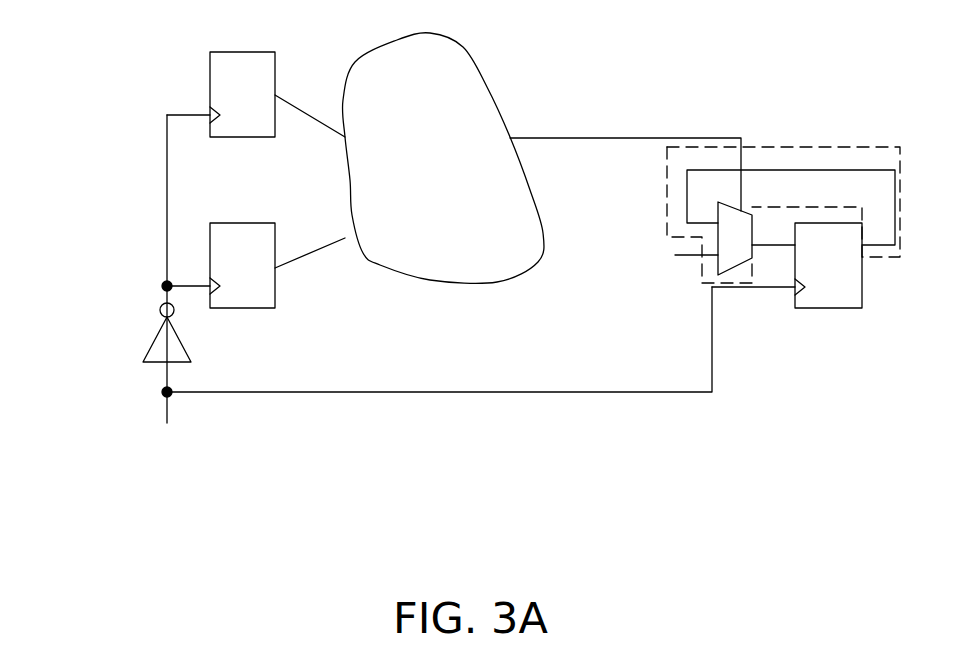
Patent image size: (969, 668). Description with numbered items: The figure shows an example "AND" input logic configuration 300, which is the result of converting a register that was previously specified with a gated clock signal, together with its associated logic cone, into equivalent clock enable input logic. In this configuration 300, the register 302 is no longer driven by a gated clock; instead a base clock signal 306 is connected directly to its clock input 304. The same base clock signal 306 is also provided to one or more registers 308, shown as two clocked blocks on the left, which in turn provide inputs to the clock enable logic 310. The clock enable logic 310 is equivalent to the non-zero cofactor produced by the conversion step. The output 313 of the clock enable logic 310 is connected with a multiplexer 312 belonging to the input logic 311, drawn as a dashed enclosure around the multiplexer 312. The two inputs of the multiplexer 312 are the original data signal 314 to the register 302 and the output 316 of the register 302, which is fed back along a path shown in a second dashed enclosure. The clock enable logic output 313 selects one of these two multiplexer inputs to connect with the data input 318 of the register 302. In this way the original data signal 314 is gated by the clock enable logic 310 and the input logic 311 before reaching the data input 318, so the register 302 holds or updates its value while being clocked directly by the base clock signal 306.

The "AND" input logic configuration 300 is at (479, 282).
The register 302 is at (842, 292).
The clock input 304 is at (792, 295).
The base clock signal 306 is at (385, 300).
The registers 308 is at (245, 125).
The clock enable logic 310 is at (443, 158).
The input logic 311 is at (665, 205).
The multiplexer 312 is at (737, 233).
The output of clock enable logic 313 is at (583, 136).
The original data signal 314 is at (674, 267).
The output of the register 316 is at (877, 170).
The data input 318 is at (793, 243).